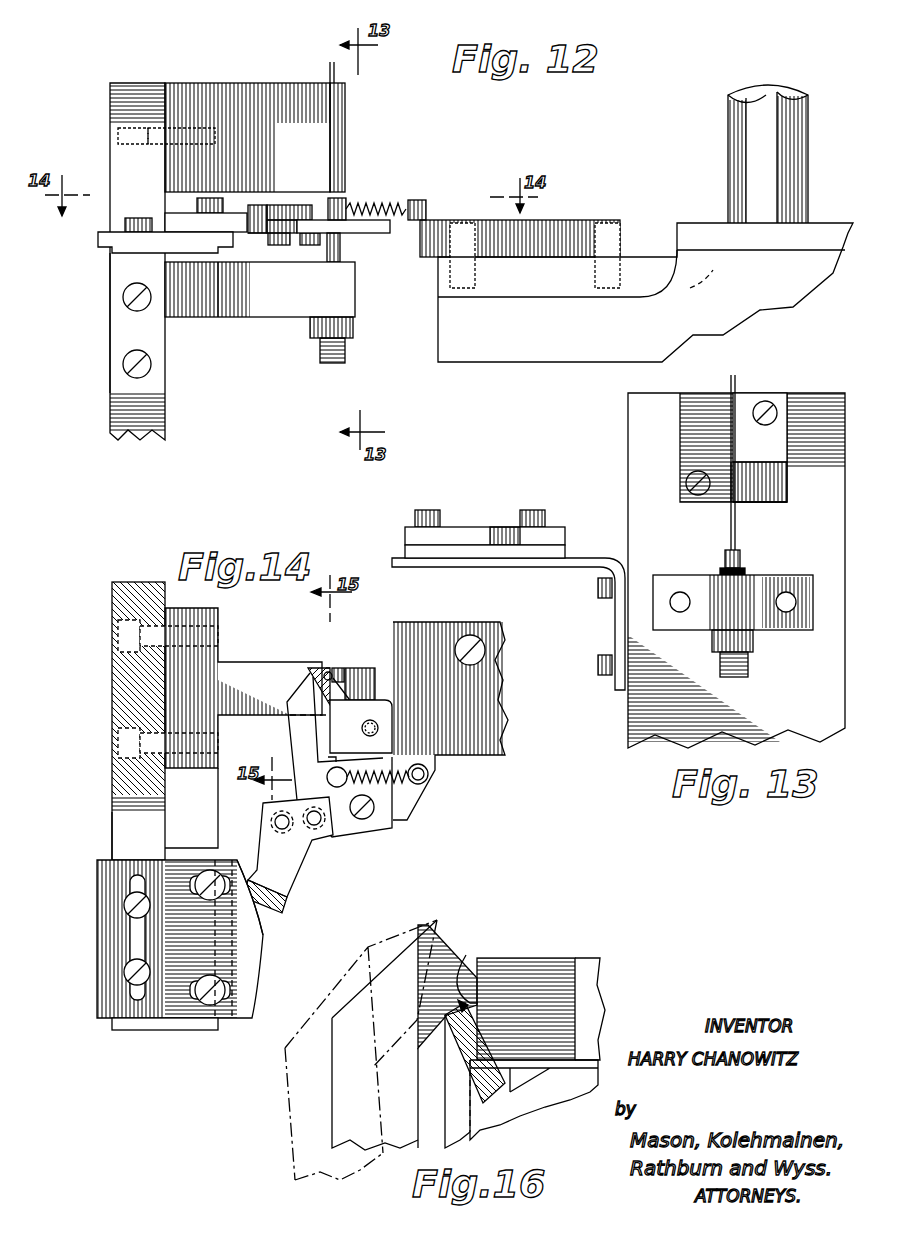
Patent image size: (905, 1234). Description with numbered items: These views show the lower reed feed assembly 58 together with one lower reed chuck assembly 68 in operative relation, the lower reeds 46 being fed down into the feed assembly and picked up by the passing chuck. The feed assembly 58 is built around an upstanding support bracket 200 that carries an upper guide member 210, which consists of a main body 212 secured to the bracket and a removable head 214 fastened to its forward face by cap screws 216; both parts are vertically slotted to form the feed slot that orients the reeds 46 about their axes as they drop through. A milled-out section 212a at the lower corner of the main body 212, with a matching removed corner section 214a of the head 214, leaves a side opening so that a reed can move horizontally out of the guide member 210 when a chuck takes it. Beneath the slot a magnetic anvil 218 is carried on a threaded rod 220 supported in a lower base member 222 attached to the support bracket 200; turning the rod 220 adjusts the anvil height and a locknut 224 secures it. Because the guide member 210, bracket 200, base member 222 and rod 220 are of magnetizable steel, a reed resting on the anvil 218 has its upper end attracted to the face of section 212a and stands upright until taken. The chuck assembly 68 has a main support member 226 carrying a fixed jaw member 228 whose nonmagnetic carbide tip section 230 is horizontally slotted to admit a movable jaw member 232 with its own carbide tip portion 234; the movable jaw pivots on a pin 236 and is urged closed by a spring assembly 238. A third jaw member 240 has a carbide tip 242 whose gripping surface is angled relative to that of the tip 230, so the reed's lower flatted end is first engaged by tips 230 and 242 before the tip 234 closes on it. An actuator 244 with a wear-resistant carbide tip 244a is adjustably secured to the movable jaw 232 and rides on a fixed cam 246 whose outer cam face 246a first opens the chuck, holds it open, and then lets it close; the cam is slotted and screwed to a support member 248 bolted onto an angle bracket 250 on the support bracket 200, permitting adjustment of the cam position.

In FIG. 12, the lower reed 46 is at (336, 68).
In FIG. 13, the lower reed 46 is at (738, 392).
In FIG. 14, the lower reed 46 is at (327, 668).
In FIG. 16, the lower reed 46 is at (463, 972).
In FIG. 12, the lower reed feed assembly 58 is at (250, 340).
In FIG. 13, the lower reed feed assembly 58 is at (663, 744).
In FIG. 12, the lower reed chuck assembly 68 is at (422, 191).
In FIG. 12, the upstanding support bracket 200 is at (110, 420).
In FIG. 13, the upstanding support bracket 200 is at (628, 716).
In FIG. 14, the upstanding support bracket 200 is at (112, 679).
In FIG. 12, the upper guide member 210 is at (380, 106).
In FIG. 13, the upper guide member 210 is at (666, 432).
In FIG. 12, the main body 212 is at (250, 83).
In FIG. 13, the main body 212 is at (788, 487).
In FIG. 13, the milled-out section of main body 212a is at (765, 495).
In FIG. 12, the removable head 214 is at (346, 135).
In FIG. 13, the removable head 214 is at (722, 380).
In FIG. 13, the removed corner section of head 214a is at (728, 494).
In FIG. 13, the cap screws 216 is at (773, 405).
In FIG. 12, the magnetic anvil 218 is at (340, 242).
In FIG. 13, the magnetic anvil 218 is at (742, 562).
In FIG. 14, the magnetic anvil 218 is at (340, 668).
In FIG. 12, the threaded rod 220 is at (345, 356).
In FIG. 13, the threaded rod 220 is at (750, 672).
In FIG. 12, the lower base member 222 is at (355, 309).
In FIG. 13, the lower base member 222 is at (753, 618).
In FIG. 14, the lower base member 222 is at (222, 665).
In FIG. 12, the locknut 224 is at (353, 331).
In FIG. 13, the locknut 224 is at (753, 645).
In FIG. 12, the main support member 226 is at (508, 355).
In FIG. 12, the fixed jaw member 228 is at (560, 222).
In FIG. 14, the fixed jaw member 228 is at (496, 692).
In FIG. 16, the fixed jaw member 228 is at (595, 979).
In FIG. 14, the tip section 230 is at (352, 680).
In FIG. 16, the tip section 230 is at (530, 966).
In FIG. 12, the movable jaw member 232 is at (340, 236).
In FIG. 14, the movable jaw member 232 is at (377, 823).
In FIG. 16, the movable jaw member 232 is at (345, 1120).
In FIG. 14, the carbide tip portion 234 is at (318, 668).
In FIG. 16, the carbide tip portion 234 is at (430, 930).
In FIG. 12, the pin 236 is at (340, 205).
In FIG. 14, the pin 236 is at (375, 806).
In FIG. 12, the spring assembly 238 is at (400, 207).
In FIG. 14, the spring assembly 238 is at (412, 786).
In FIG. 14, the third jaw member 240 is at (392, 731).
In FIG. 16, the third jaw member 240 is at (503, 1120).
In FIG. 14, the carbide tip 242 is at (352, 695).
In FIG. 16, the carbide tip 242 is at (505, 1094).
In FIG. 12, the actuator 244 is at (290, 214).
In FIG. 14, the actuator 244 is at (294, 866).
In FIG. 12, the carbide tip of actuator 244a is at (258, 214).
In FIG. 14, the carbide tip of actuator 244a is at (290, 900).
In FIG. 12, the fixed cam 246 is at (172, 215).
In FIG. 13, the fixed cam 246 is at (458, 524).
In FIG. 14, the fixed cam 246 is at (248, 945).
In FIG. 12, the outer cam face 246a is at (262, 236).
In FIG. 13, the outer cam face 246a is at (505, 525).
In FIG. 14, the outer cam face 246a is at (262, 960).
In FIG. 12, the support member 248 is at (98, 242).
In FIG. 13, the support member 248 is at (482, 553).
In FIG. 14, the support member 248 is at (97, 996).
In FIG. 12, the angle bracket 250 is at (110, 283).
In FIG. 13, the angle bracket 250 is at (615, 645).
In FIG. 14, the angle bracket 250 is at (112, 832).